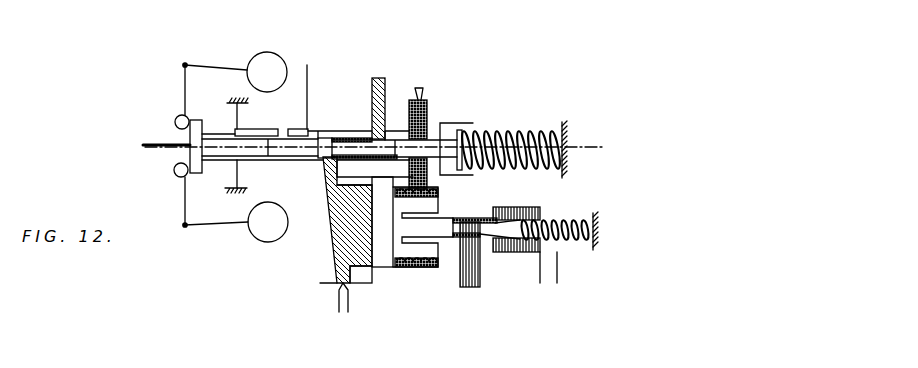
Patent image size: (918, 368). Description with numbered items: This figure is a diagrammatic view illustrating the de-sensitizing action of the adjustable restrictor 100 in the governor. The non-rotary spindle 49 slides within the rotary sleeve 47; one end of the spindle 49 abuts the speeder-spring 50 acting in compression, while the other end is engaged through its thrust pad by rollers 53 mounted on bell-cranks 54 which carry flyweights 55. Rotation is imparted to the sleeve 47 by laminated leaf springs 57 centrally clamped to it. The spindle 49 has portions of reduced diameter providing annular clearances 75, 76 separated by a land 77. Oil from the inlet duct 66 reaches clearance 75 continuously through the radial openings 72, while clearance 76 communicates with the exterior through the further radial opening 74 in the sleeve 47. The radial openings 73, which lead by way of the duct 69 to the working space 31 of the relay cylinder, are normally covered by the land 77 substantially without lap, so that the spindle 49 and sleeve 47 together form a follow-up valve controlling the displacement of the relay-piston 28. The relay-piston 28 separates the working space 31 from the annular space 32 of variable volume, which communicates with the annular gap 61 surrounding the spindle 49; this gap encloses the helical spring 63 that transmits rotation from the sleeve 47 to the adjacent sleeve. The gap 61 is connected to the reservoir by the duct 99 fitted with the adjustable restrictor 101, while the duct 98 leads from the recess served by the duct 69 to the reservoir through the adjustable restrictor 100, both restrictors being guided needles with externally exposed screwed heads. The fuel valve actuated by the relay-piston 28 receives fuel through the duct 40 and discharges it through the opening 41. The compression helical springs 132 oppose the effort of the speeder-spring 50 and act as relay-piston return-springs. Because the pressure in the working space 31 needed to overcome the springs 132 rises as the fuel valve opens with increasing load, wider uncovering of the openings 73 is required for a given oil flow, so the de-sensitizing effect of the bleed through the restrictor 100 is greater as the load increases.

The bell-cranks 54 is at (205, 65).
The flyweights 55 is at (268, 64).
The rollers 53 is at (176, 119).
The laminated leaf springs 57 is at (236, 119).
The spindle 49 is at (218, 148).
The radial opening 74 is at (283, 131).
The annular clearance 76 is at (303, 133).
The land 77 is at (328, 138).
The rotary sleeve 47 is at (345, 131).
The annular clearance 75 is at (362, 138).
The inlet duct 66 is at (381, 70).
The radial openings 72 is at (390, 131).
The duct 99 is at (427, 113).
The adjustable restrictor 101 is at (422, 92).
The annular gap 61 is at (432, 125).
The helical spring 63 is at (428, 185).
The speeder-spring 50 is at (518, 133).
The radial openings 73 is at (322, 165).
The duct 69 is at (330, 212).
The relay-piston 28 is at (378, 256).
The working space 31 is at (357, 268).
The annular space 32 is at (410, 265).
The duct 98 is at (333, 284).
The adjustable restrictor 100 is at (343, 300).
The duct 40 is at (472, 330).
The opening 41 is at (547, 272).
The compression helical springs 132 is at (567, 218).